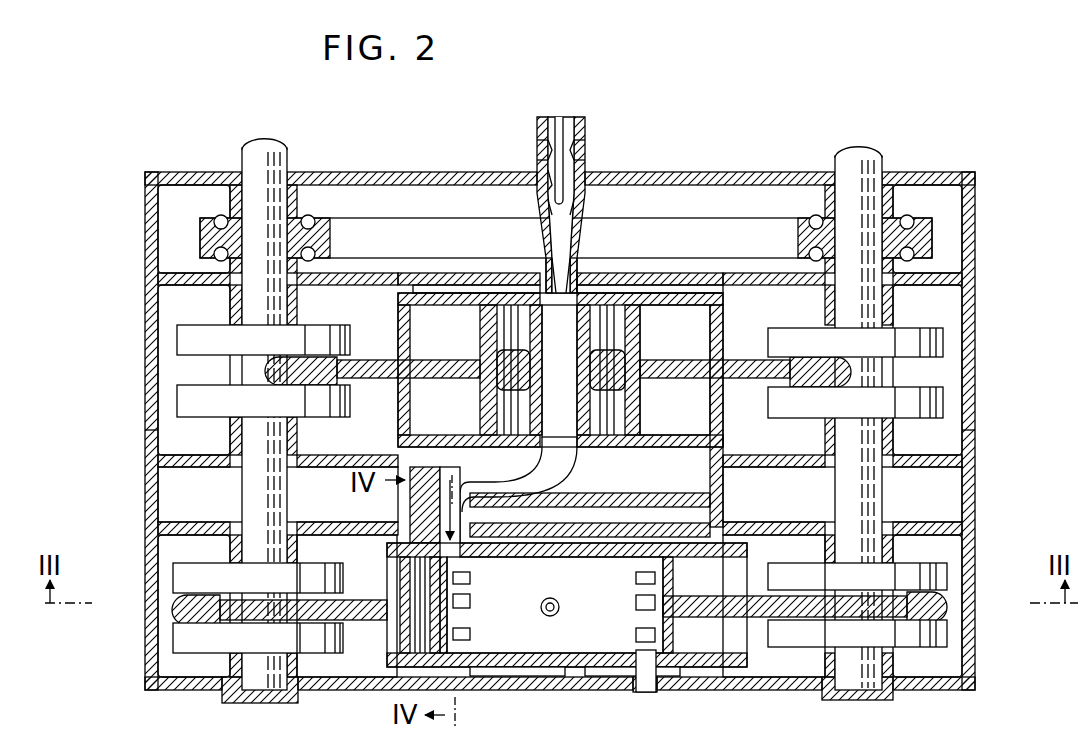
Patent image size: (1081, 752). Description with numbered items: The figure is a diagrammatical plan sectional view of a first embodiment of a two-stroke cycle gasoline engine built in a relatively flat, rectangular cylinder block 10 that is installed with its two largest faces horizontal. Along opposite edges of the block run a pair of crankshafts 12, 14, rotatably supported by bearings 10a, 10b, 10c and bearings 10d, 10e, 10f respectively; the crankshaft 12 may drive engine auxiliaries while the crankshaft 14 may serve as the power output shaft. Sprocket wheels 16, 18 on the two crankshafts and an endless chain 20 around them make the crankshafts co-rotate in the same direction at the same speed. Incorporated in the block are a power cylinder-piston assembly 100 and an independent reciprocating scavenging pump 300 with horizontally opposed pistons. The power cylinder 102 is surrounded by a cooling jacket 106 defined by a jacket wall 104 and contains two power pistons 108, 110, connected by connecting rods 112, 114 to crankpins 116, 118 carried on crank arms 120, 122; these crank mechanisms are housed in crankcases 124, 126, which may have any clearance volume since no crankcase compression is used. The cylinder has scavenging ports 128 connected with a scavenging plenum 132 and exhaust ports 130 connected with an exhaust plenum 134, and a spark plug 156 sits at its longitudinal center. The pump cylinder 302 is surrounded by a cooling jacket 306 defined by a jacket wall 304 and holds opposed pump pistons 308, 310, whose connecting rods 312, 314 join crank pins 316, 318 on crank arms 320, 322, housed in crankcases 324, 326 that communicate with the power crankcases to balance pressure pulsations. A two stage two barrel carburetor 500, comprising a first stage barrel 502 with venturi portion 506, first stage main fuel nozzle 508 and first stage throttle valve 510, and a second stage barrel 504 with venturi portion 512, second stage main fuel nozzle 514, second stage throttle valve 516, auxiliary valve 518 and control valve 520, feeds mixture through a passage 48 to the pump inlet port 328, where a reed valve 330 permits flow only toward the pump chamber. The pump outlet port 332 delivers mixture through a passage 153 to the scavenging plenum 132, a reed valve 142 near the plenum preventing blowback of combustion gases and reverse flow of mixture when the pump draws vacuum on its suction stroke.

The cylinder block 10 is at (178, 172).
The bearing 10a is at (230, 553).
The bearing 10b is at (230, 308).
The bearing 10c is at (230, 200).
The bearing 10d is at (893, 550).
The bearing 10e is at (893, 305).
The bearing 10f is at (893, 207).
The crankshaft 12 is at (262, 140).
The crankshaft 14 is at (856, 150).
The sprocket wheel 16 is at (318, 218).
The sprocket wheel 18 is at (810, 218).
The endless chain 20 is at (376, 230).
The passage 48 is at (546, 275).
The power cylinder-piston assembly 100 is at (592, 667).
The power cylinder 102 is at (538, 557).
The jacket wall 104 is at (533, 677).
The cooling jacket 106 is at (492, 667).
The power piston 108 is at (470, 630).
The power piston 110 is at (636, 632).
The connecting rod 112 is at (270, 600).
The connecting rod 114 is at (830, 596).
The crankpin 116 is at (178, 608).
The crankpin 118 is at (940, 607).
The crank arm 120 is at (173, 578).
The crank arm 122 is at (947, 578).
The crankcase 124 is at (335, 677).
The crankcase 126 is at (785, 677).
The scavenging ports 128 is at (470, 601).
The exhaust ports 130 is at (636, 602).
The scavenging plenum 132 is at (485, 573).
The exhaust plenum 134 is at (645, 692).
The reed valve 142 is at (440, 503).
The passage 153 is at (548, 480).
The spark plug 156 is at (558, 615).
The scavenging pump 300 is at (688, 273).
The pump cylinder 302 is at (675, 305).
The jacket wall 304 is at (682, 285).
The cooling jacket 306 is at (625, 285).
The pump piston 308 is at (485, 318).
The pump piston 310 is at (640, 415).
The connecting rod 312 is at (378, 360).
The connecting rod 314 is at (705, 360).
The crank pin 316 is at (272, 372).
The crank pin 318 is at (848, 372).
The crank arm 320 is at (177, 392).
The crank arm 322 is at (943, 402).
The crankcase 324 is at (152, 437).
The crankcase 326 is at (965, 440).
The inlet port 328 is at (562, 371).
The reed valve 330 is at (568, 255).
The outlet port 332 is at (556, 440).
The carburetor 500 is at (585, 128).
The first stage barrel 502 is at (548, 117).
The second stage barrel 504 is at (575, 117).
The venturi portion 506 is at (540, 140).
The first stage main fuel nozzle 508 is at (546, 142).
The first stage throttle valve 510 is at (548, 180).
The venturi portion 512 is at (570, 125).
The second stage main fuel nozzle 514 is at (574, 141).
The second stage throttle valve 516 is at (568, 200).
The auxiliary valve 518 is at (574, 158).
The control valve 520 is at (552, 215).